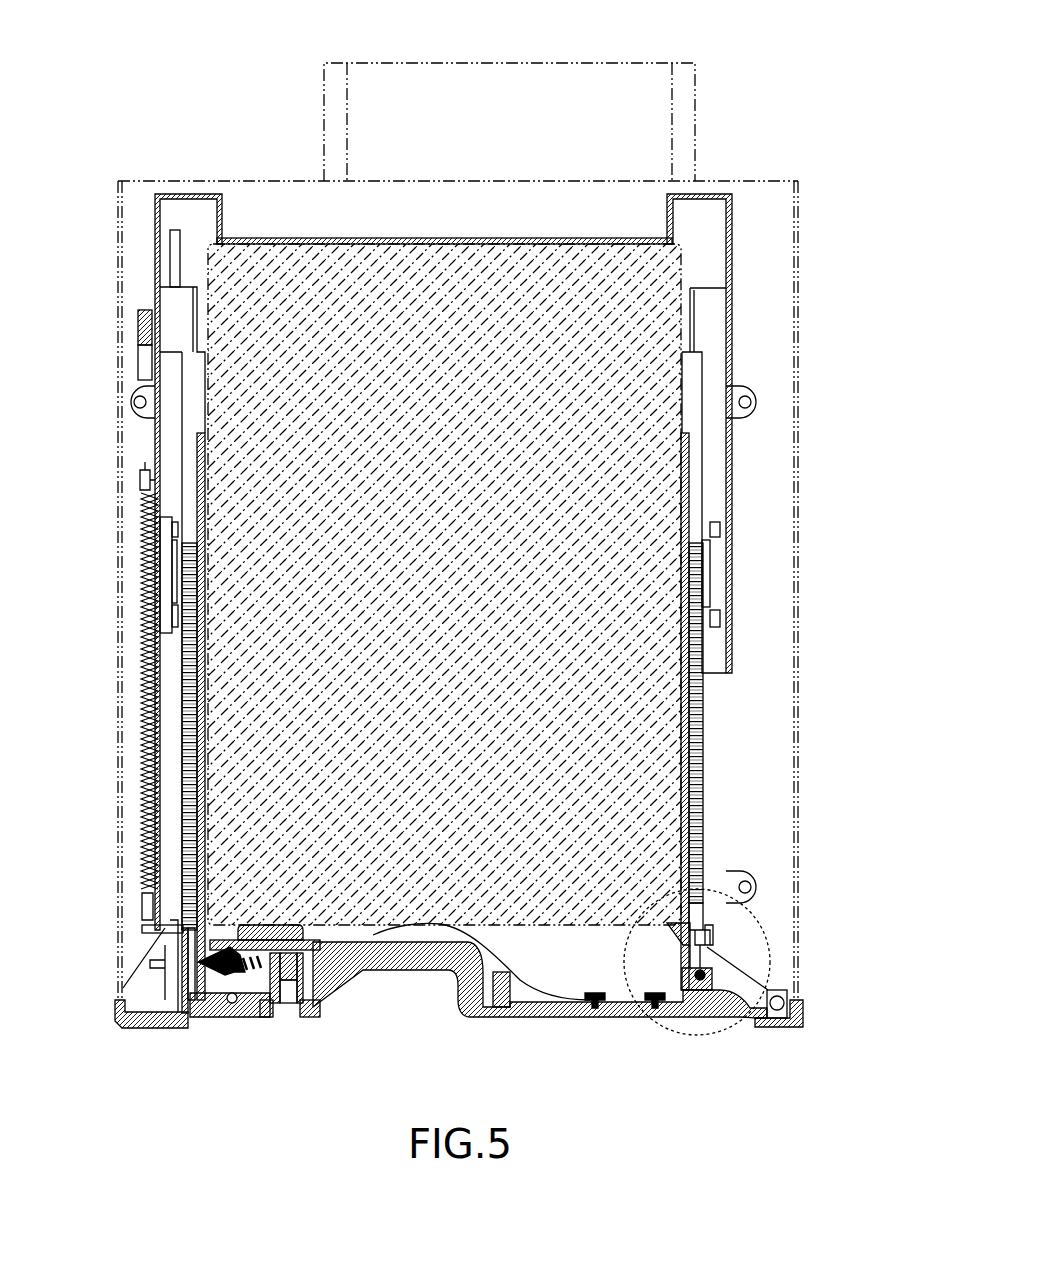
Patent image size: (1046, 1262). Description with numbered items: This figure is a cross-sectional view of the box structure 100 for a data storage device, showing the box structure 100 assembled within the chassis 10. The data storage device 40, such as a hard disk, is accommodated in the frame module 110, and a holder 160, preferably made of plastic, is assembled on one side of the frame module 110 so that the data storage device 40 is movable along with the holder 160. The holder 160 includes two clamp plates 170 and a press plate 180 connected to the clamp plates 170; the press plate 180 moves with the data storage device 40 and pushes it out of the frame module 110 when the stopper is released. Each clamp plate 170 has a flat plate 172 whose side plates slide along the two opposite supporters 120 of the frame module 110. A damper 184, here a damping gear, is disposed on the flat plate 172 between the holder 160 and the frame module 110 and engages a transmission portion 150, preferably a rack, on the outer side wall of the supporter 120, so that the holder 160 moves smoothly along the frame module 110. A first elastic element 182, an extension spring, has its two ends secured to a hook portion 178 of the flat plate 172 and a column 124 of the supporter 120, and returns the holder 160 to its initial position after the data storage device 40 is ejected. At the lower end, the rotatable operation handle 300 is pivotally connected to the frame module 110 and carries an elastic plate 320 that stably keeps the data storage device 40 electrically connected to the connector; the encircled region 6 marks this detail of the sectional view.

The chassis 10 is at (798, 284).
The box structure 100 is at (501, 48).
The data storage device 40 is at (447, 640).
The press plate 180 is at (613, 238).
The frame module 110 is at (175, 303).
The clamp plate 170 is at (733, 235).
The holder 160 is at (732, 79).
The flat plate 172 is at (152, 380).
The hook portion 178 is at (146, 485).
The damper 184 is at (172, 567).
The supporter 120 is at (187, 722).
The transmission portion 150 is at (185, 777).
The first elastic element 182 is at (148, 862).
The column 124 is at (148, 921).
The elastic plate 320 is at (440, 924).
The operation handle 300 is at (562, 1010).
The detail region 6 is at (768, 921).